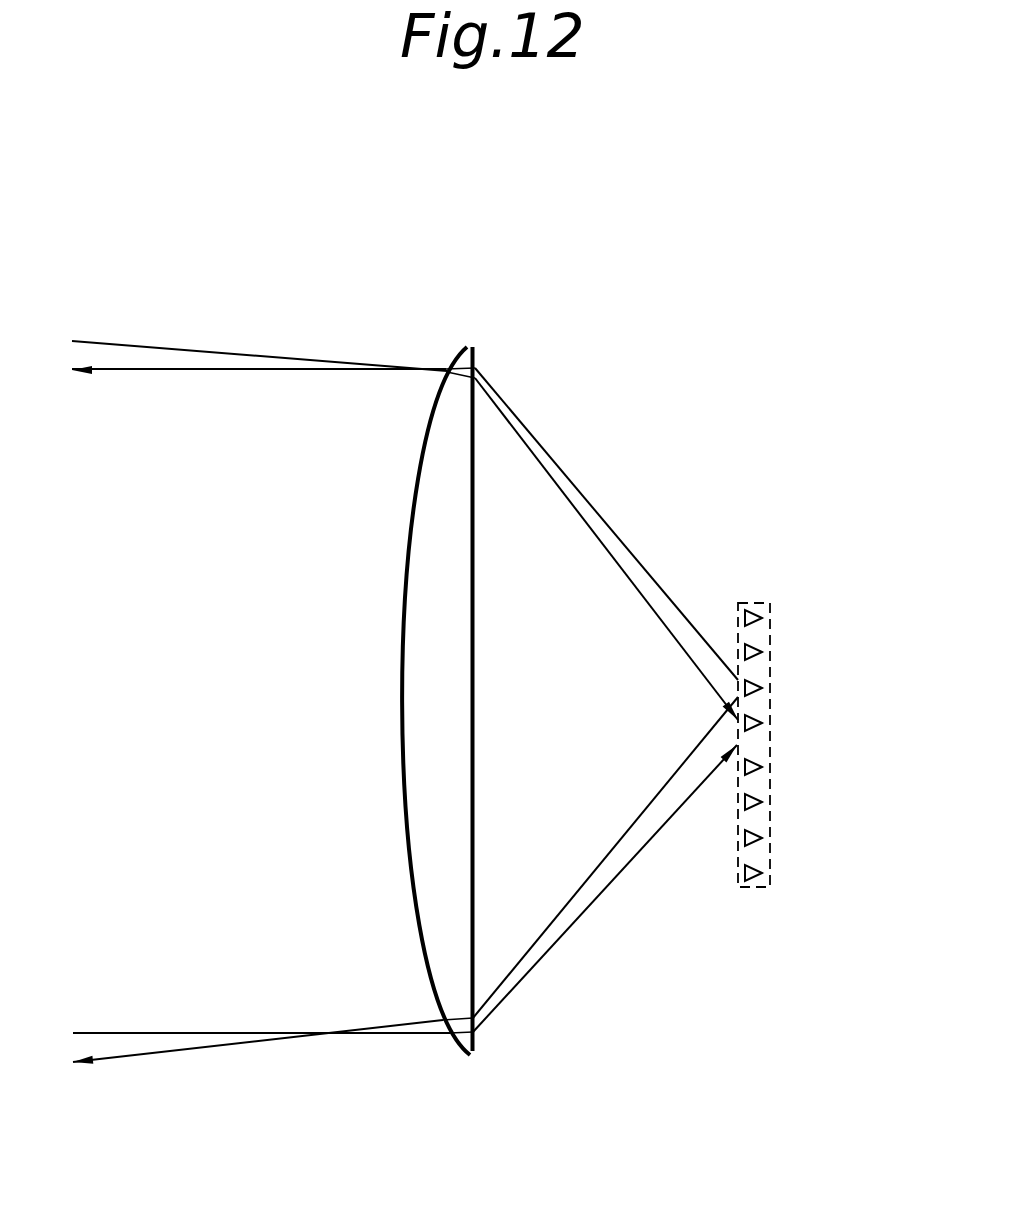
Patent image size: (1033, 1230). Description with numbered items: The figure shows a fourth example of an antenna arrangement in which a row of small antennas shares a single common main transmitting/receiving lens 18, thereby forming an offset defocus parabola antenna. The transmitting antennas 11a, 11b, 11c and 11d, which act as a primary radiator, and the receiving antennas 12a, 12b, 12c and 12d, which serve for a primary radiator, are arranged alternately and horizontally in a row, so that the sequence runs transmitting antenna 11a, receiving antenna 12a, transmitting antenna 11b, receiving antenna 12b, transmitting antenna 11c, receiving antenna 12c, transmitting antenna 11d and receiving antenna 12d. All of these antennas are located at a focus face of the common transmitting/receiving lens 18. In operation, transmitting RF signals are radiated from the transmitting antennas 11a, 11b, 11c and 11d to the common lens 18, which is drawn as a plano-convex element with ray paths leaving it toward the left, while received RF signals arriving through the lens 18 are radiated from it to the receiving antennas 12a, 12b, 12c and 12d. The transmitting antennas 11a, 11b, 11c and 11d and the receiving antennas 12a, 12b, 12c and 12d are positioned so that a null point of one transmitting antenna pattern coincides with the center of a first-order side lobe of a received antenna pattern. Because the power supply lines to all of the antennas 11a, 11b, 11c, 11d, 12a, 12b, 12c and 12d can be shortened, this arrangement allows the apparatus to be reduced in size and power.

The common main transmitting/receiving lens 18 is at (467, 347).
The transmitting antenna 11a is at (764, 614).
The receiving antenna 12a is at (764, 648).
The transmitting antenna 11b is at (764, 684).
The receiving antenna 12b is at (764, 719).
The transmitting antenna 11c is at (764, 768).
The receiving antenna 12c is at (764, 803).
The transmitting antenna 11d is at (764, 839).
The receiving antenna 12d is at (764, 874).